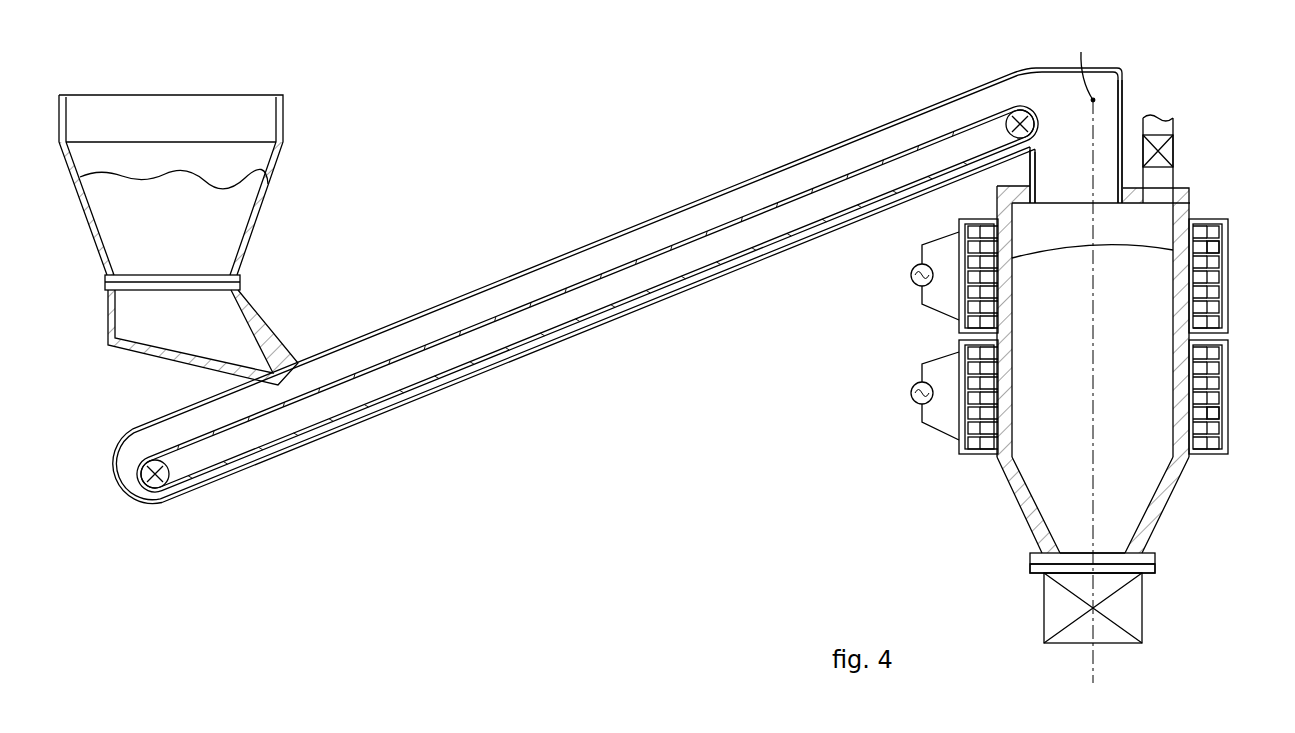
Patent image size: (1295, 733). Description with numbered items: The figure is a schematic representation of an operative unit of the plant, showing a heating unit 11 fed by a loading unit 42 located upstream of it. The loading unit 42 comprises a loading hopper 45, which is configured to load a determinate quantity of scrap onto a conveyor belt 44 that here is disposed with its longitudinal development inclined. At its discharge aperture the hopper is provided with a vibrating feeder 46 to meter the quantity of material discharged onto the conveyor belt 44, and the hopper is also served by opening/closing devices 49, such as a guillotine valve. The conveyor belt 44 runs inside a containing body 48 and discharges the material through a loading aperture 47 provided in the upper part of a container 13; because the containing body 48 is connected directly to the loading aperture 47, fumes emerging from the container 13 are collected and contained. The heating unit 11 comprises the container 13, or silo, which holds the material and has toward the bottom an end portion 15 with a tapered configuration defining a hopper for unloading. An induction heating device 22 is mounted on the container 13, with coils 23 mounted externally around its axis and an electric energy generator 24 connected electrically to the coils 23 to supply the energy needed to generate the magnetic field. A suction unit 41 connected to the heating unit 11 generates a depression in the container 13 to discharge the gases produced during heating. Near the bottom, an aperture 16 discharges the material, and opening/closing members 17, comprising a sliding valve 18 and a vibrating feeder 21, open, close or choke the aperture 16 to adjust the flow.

The heating unit 11 is at (1212, 189).
The container 13 is at (997, 483).
The end portion 15 is at (1165, 482).
The aperture 16 is at (1060, 554).
The opening/closing members 17 is at (1158, 567).
The sliding valve 18 is at (1043, 567).
The vibrating feeder 21 is at (1125, 607).
The induction heating device 22 is at (1229, 292).
The coils 23 is at (1214, 246).
The electric energy generator 24 is at (911, 275).
The suction unit 41 is at (1177, 125).
The loading unit 42 is at (757, 161).
The conveyor belt 44 is at (520, 310).
The loading hopper 45 is at (274, 177).
The vibrating feeder 46 is at (259, 326).
The loading aperture 47 is at (1118, 196).
The containing body 48 is at (900, 118).
The opening/closing devices 49 is at (240, 283).